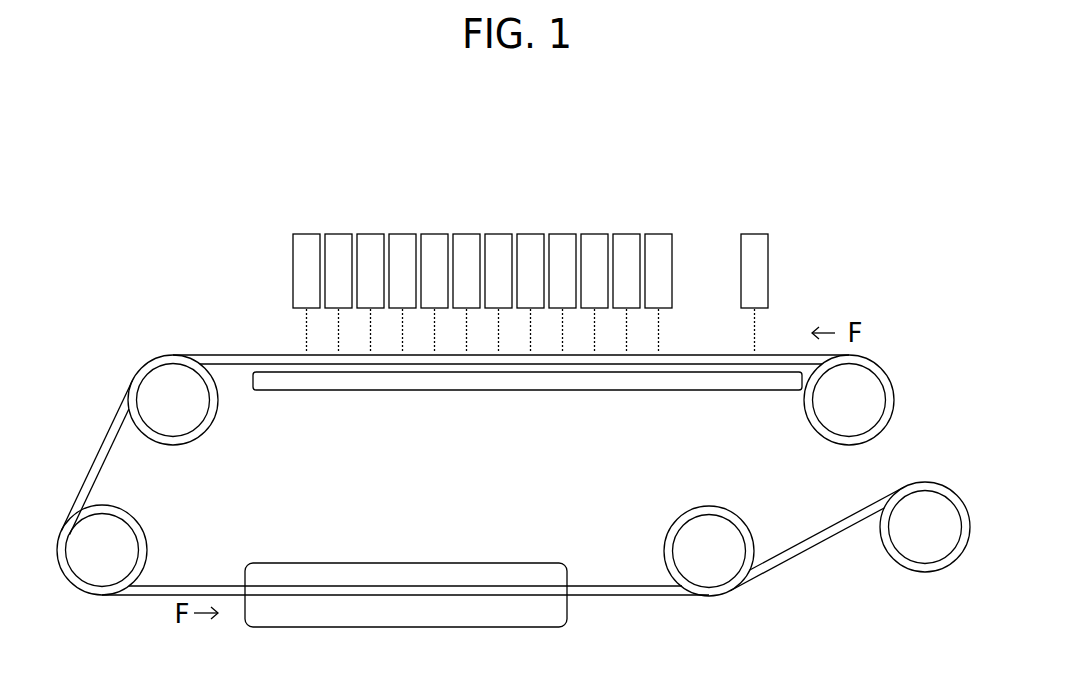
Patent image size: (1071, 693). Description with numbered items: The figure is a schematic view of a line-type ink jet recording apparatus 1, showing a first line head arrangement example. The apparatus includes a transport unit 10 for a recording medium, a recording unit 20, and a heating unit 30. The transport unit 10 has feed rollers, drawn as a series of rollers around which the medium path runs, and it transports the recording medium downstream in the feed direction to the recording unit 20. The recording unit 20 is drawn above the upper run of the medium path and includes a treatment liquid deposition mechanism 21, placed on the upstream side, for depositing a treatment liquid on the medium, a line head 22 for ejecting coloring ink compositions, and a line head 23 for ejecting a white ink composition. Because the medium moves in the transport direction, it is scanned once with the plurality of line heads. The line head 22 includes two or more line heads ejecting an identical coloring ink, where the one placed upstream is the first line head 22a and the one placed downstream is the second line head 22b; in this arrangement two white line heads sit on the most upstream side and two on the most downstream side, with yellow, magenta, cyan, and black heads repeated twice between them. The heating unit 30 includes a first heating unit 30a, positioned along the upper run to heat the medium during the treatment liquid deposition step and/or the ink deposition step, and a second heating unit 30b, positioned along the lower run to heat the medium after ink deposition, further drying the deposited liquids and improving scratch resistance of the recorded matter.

The ink jet recording apparatus 1 is at (865, 242).
The transport unit 10 is at (181, 422).
The recording unit 20 is at (776, 138).
The treatment liquid deposition mechanism 21 is at (754, 243).
The line head for ejecting a coloring ink composition 22 is at (484, 225).
The first line head 22a is at (532, 248).
The second line head 22b is at (406, 243).
The line head for ejecting a white ink composition 23 is at (304, 243).
The heating unit 30 is at (523, 499).
The first heating unit 30a is at (471, 387).
The second heating unit 30b is at (406, 566).